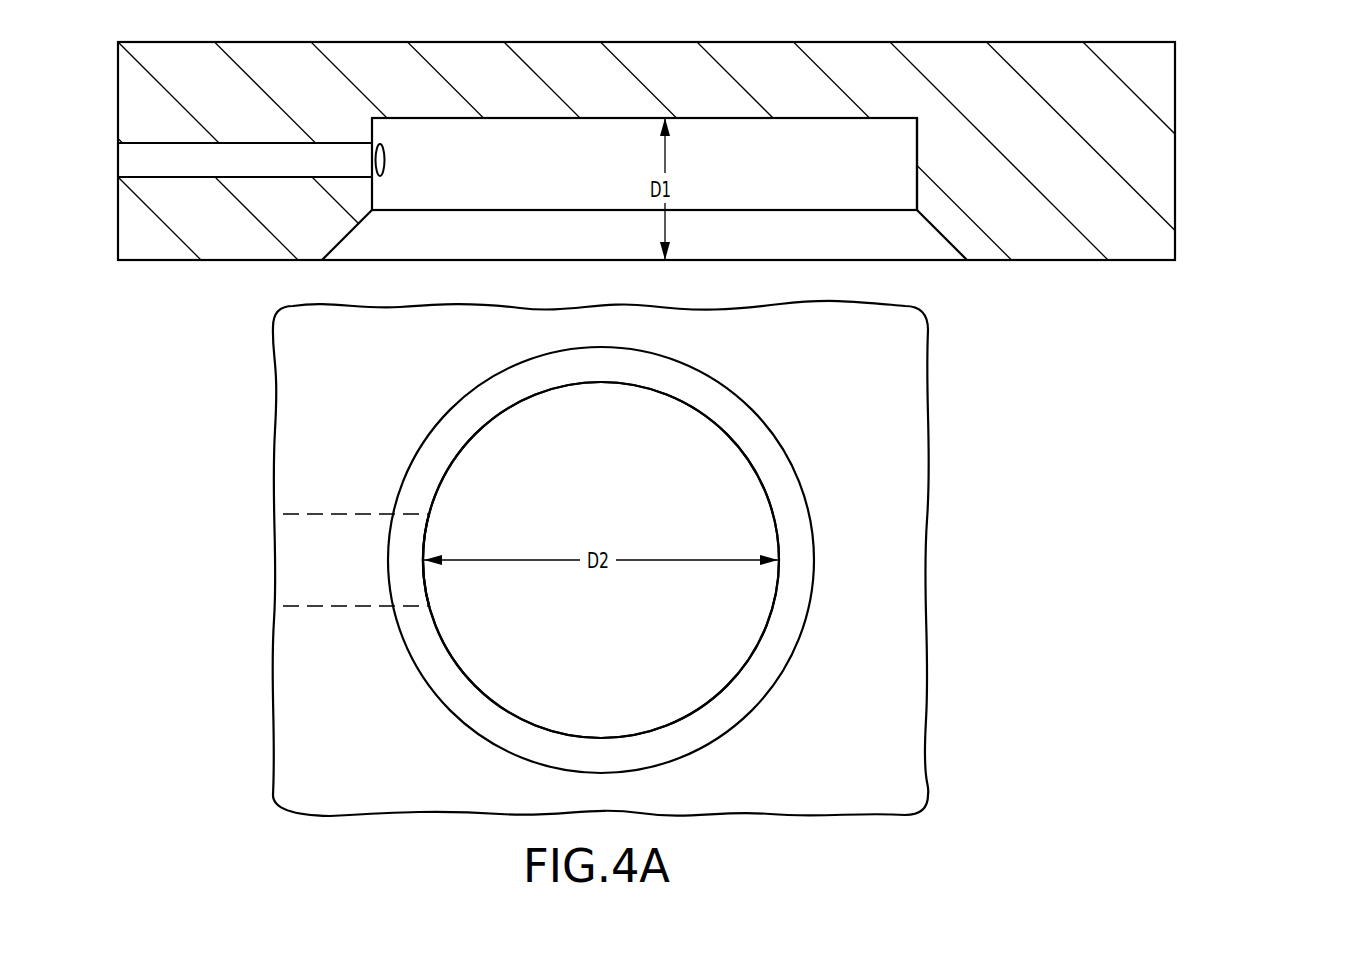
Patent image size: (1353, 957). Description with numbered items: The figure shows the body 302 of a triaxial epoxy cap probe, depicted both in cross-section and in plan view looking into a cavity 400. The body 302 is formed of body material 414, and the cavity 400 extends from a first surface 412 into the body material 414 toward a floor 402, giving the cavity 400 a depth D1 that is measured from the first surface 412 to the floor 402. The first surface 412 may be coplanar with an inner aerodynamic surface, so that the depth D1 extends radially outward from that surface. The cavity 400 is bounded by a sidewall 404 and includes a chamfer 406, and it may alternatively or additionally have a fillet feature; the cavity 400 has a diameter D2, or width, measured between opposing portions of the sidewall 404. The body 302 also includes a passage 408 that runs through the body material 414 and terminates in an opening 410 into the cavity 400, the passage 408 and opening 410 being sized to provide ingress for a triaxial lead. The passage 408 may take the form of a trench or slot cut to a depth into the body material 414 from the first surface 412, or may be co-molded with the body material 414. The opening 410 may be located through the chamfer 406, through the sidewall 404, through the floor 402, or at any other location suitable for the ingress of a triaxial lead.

The body 302 is at (1218, 87).
The cavity 400 is at (833, 176).
The floor 402 is at (835, 118).
The sidewall 404 is at (918, 118).
The chamfer 406 is at (945, 235).
The passage 408 is at (302, 143).
The opening 410 is at (385, 158).
The first surface 412 is at (227, 260).
The body material 414 is at (633, 82).